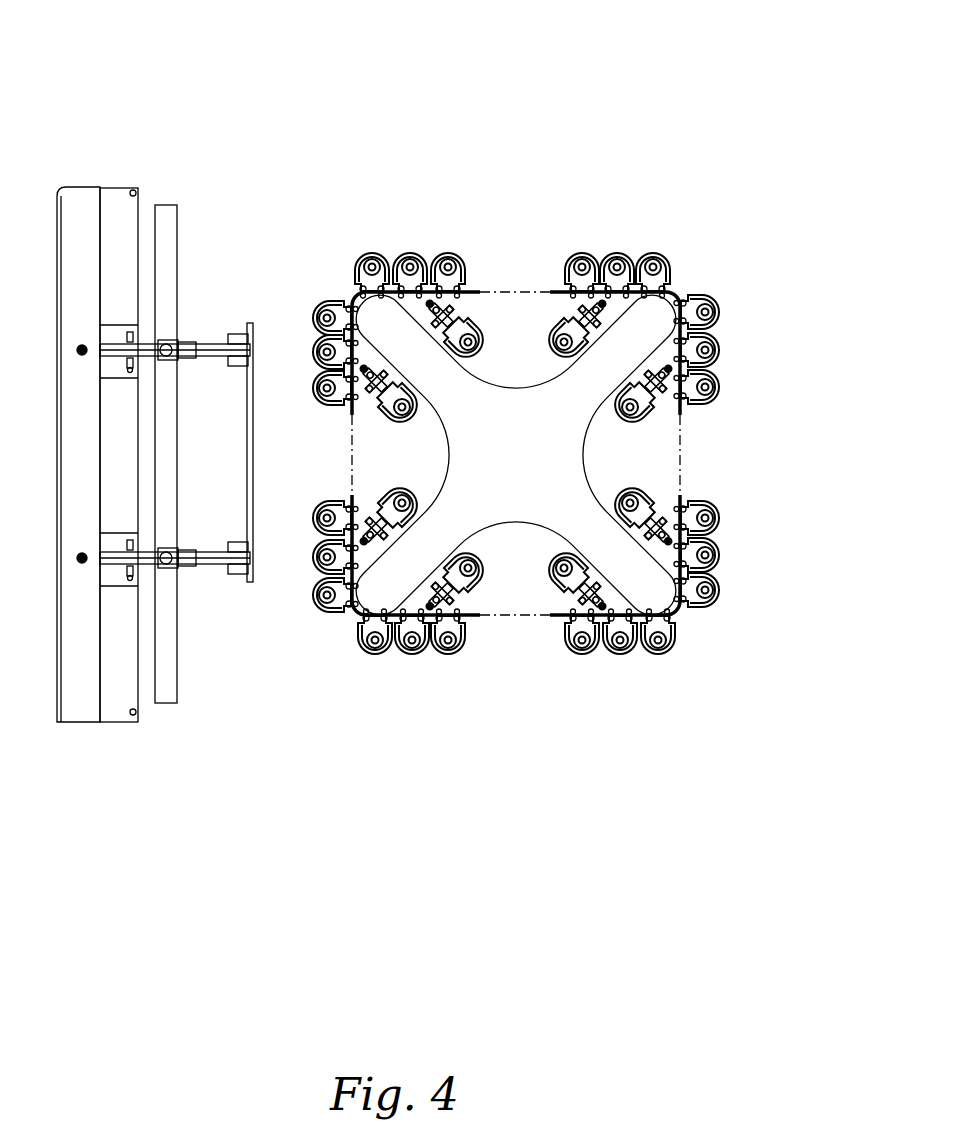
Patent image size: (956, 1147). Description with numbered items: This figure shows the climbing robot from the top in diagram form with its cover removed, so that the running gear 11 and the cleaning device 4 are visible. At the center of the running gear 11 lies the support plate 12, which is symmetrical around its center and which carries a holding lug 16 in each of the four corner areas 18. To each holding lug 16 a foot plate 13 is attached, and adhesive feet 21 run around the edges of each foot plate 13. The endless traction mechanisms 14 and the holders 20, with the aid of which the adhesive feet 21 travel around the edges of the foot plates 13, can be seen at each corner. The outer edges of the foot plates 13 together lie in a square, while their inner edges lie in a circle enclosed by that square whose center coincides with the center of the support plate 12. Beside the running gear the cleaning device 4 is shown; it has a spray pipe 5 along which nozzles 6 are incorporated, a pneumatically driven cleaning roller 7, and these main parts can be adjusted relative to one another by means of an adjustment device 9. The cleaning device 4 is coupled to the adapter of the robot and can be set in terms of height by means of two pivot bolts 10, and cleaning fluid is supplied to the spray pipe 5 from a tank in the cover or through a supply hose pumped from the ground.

The cleaning device 4 is at (100, 125).
The spray pipe 5 is at (170, 226).
The nozzles 6 is at (83, 700).
The cleaning roller 7 is at (125, 686).
The adjustment device 9 is at (203, 347).
The pivot bolts 10 is at (238, 582).
The running gear 11 is at (484, 795).
The support plate 12 is at (516, 455).
The foot plate 13 is at (383, 323).
The endless traction mechanisms 14 is at (558, 296).
The holding lug 16 is at (410, 258).
The corner areas 18 is at (542, 441).
The holders 20 is at (683, 600).
The adhesive feet 21 is at (322, 318).